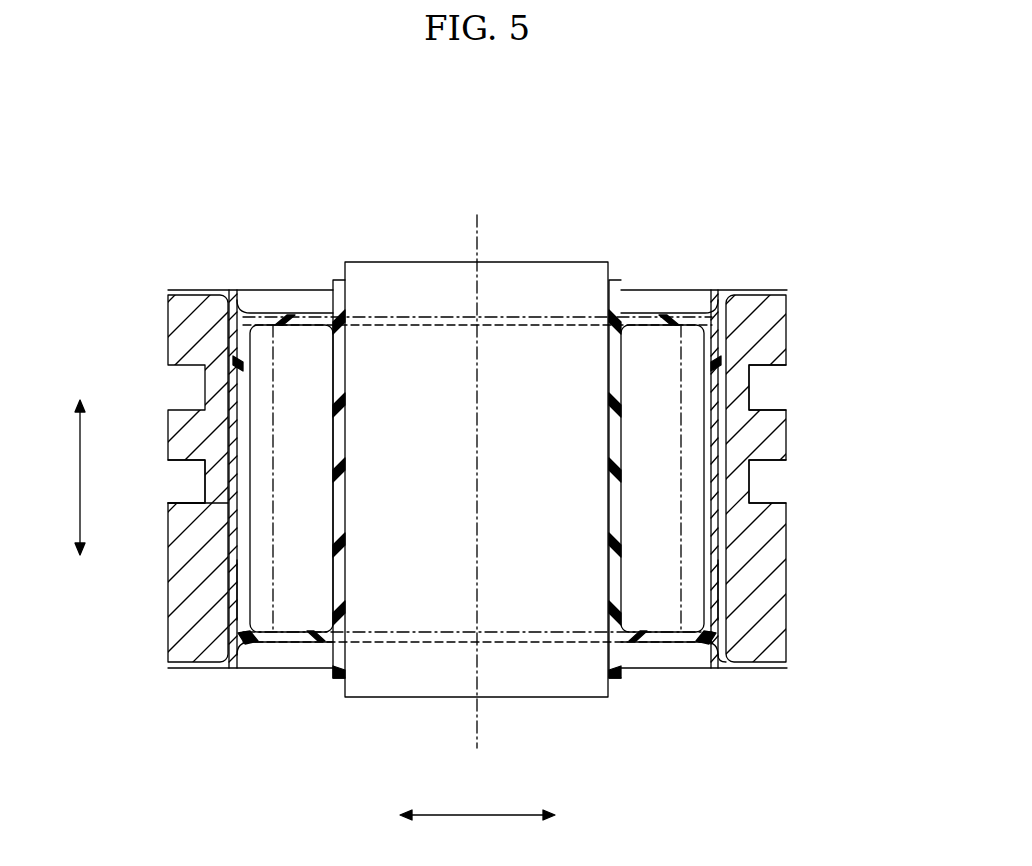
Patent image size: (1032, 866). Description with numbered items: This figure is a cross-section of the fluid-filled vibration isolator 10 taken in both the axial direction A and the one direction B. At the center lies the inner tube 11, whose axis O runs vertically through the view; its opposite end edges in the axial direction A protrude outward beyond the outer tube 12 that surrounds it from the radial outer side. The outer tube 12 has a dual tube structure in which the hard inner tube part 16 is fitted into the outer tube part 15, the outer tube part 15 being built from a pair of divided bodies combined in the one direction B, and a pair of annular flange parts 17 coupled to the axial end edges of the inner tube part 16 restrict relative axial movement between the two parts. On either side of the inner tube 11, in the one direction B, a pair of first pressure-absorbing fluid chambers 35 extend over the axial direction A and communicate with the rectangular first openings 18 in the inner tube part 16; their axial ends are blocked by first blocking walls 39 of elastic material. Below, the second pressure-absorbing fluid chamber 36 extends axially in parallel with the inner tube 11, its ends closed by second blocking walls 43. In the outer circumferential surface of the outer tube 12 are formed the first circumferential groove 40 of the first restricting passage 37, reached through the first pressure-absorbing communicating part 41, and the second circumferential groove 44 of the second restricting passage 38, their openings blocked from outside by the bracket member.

The vibration isolator 10 is at (481, 403).
The inner tube 11 is at (395, 262).
The outer tube 12 is at (802, 469).
The outer tube part 15 is at (770, 606).
The inner tube part 16 is at (713, 656).
The annular flange part 17 is at (185, 290).
The first opening 18 is at (235, 590).
The first pressure-absorbing fluid chamber 35 is at (288, 470).
The second pressure-absorbing fluid chamber 36 is at (370, 628).
The first restricting passage 37 is at (769, 482).
The second restricting passage 38 is at (769, 385).
The first blocking wall 39 is at (296, 316).
The first circumferential groove 40 is at (200, 472).
The first pressure-absorbing communicating part 41 is at (218, 503).
The second blocking wall 43 is at (545, 316).
The second circumferential groove 44 is at (190, 367).
The axis O is at (475, 238).
The axial direction A is at (71, 477).
The one direction B is at (477, 831).